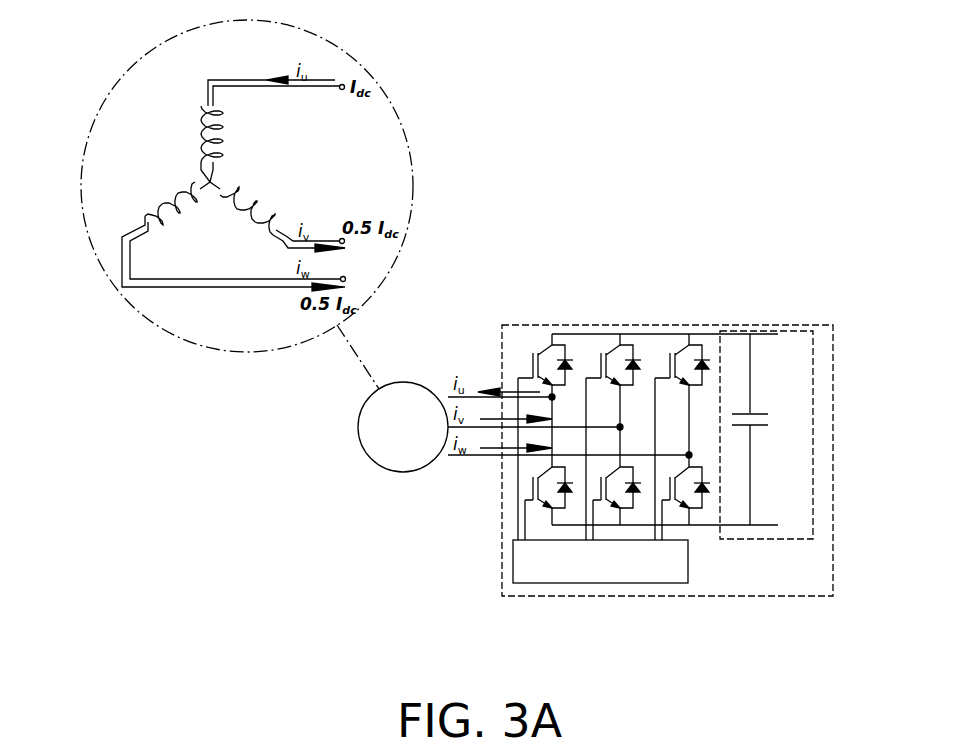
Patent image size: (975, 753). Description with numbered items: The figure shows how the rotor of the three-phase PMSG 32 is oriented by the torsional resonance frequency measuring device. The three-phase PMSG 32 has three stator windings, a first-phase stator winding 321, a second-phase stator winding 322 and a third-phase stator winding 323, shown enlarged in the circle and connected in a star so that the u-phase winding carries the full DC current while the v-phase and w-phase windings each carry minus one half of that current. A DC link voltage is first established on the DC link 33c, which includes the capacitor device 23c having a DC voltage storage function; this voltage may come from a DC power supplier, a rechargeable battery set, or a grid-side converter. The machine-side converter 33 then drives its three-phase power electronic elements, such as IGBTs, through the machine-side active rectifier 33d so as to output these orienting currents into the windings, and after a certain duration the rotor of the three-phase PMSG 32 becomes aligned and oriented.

The three-phase PMSG 32 is at (419, 383).
The first-phase stator winding 321 is at (202, 110).
The second-phase stator winding 322 is at (257, 203).
The third-phase stator winding 323 is at (162, 203).
The machine-side converter 33 is at (620, 316).
The DC link 33c is at (778, 331).
The capacitor device 23c is at (754, 432).
The machine-side active rectifier 33d is at (626, 583).